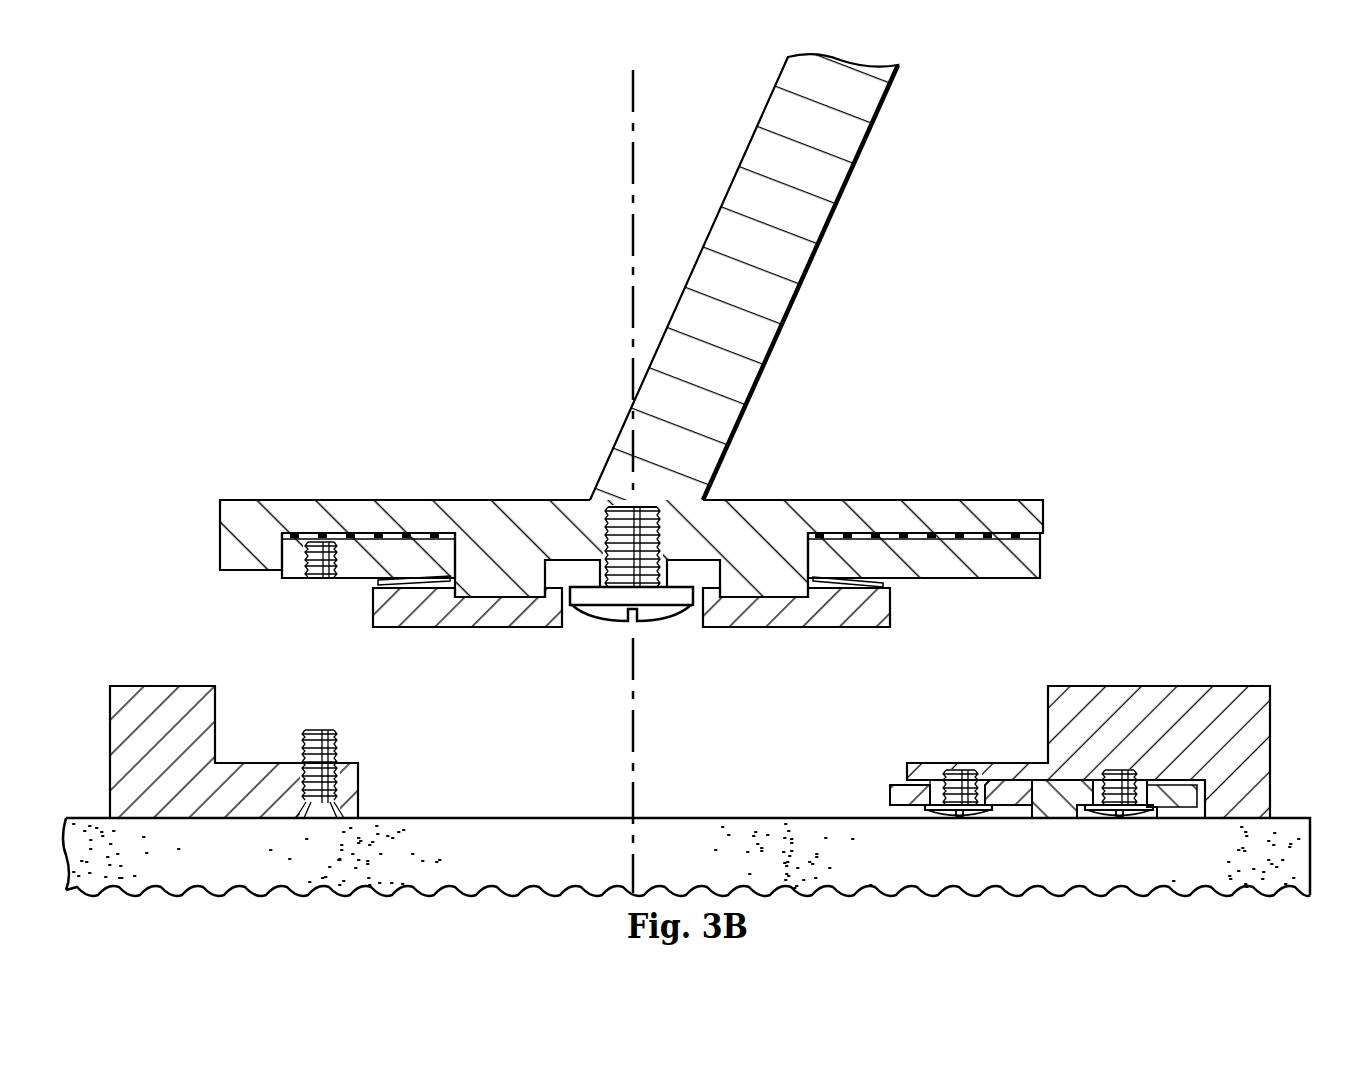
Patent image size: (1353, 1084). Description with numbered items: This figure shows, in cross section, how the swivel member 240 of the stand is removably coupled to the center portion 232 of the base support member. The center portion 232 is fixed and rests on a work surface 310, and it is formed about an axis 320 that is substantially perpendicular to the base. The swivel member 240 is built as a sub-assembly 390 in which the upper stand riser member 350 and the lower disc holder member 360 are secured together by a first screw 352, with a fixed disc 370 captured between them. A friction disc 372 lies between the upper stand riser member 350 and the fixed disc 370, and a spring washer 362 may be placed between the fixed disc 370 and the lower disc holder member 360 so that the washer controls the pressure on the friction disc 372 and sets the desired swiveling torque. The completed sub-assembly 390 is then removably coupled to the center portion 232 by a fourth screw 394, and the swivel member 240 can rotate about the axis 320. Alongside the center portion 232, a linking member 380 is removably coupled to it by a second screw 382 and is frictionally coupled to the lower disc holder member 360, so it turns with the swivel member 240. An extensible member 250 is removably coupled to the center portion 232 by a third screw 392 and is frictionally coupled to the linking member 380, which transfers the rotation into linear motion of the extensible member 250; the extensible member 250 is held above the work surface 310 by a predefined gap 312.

The swivel member 240 is at (436, 286).
The center portion 232 is at (157, 697).
The extensible member 250 is at (1050, 805).
The work surface 310 is at (512, 818).
The predefined gap 312 is at (1210, 812).
The axis 320 is at (630, 222).
The upper stand riser member 350 is at (621, 428).
The screw S1 352 is at (612, 620).
The lower disc holder member 360 is at (455, 615).
The spring washer SW 362 is at (378, 584).
The fixed disc 370 is at (1010, 578).
The friction disc 372 is at (378, 537).
The linking member 380 is at (890, 797).
The screw S2 382 is at (962, 818).
The sub-assembly 390 is at (726, 182).
The screw S3 392 is at (1122, 818).
The screw S4 394 is at (318, 729).